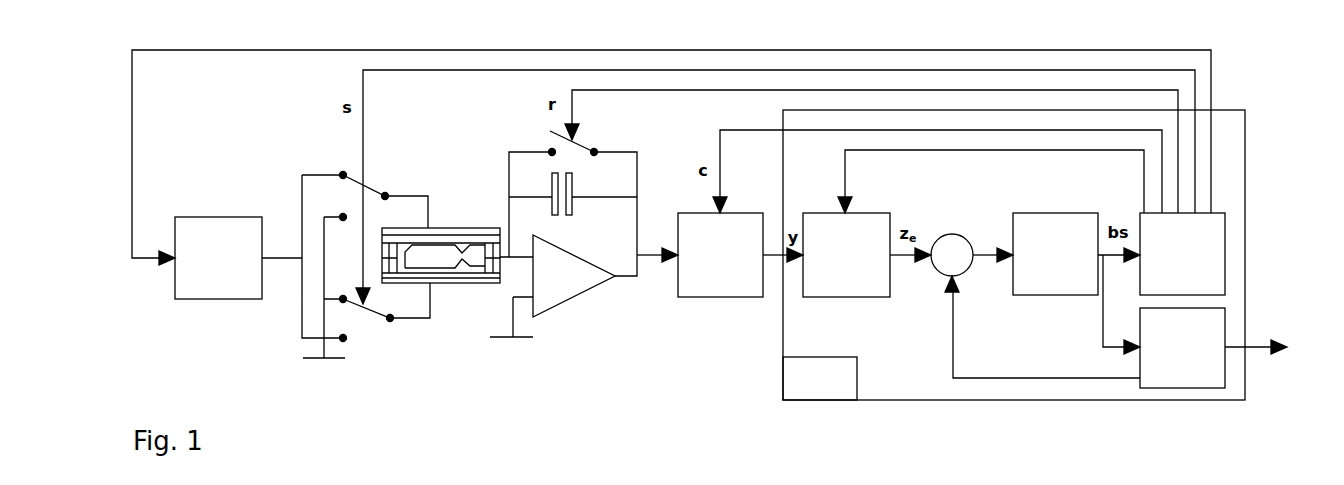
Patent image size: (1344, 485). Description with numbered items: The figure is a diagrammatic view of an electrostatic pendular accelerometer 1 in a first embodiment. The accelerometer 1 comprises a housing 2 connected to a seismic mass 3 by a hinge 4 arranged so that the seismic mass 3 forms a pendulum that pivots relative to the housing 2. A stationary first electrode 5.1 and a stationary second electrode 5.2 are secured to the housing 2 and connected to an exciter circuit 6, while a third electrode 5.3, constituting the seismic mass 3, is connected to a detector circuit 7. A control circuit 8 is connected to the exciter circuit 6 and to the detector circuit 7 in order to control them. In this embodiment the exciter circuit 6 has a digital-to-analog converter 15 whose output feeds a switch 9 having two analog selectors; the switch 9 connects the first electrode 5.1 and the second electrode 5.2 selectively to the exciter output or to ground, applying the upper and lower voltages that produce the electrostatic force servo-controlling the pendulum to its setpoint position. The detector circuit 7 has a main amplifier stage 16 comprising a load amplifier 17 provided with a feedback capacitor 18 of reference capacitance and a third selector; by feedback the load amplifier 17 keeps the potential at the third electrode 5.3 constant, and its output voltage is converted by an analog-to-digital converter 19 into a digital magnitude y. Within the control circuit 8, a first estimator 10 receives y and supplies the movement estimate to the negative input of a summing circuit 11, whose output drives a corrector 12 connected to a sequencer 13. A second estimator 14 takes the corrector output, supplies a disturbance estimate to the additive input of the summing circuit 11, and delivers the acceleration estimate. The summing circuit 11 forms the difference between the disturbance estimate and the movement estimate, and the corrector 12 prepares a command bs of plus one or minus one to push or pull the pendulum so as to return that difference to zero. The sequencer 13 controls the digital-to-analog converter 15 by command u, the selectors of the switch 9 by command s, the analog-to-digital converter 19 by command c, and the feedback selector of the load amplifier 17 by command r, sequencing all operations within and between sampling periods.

The electrostatic pendular accelerometer 1 is at (441, 291).
The housing 2 is at (490, 253).
The seismic mass 3 is at (437, 258).
The hinge 4 is at (468, 250).
The first electrode 5.1 is at (440, 228).
The second electrode 5.2 is at (472, 278).
The third electrode 5.3 is at (453, 258).
The exciter circuit 6 is at (229, 186).
The detector circuit 7 is at (711, 338).
The control circuit 8 is at (868, 383).
The switch 9 is at (388, 163).
The first estimator 10 is at (817, 283).
The summing circuit 11 is at (945, 262).
The corrector 12 is at (1047, 285).
The sequencer 13 is at (1215, 225).
The second estimator 14 is at (1215, 322).
The digital-to-analog converter 15 is at (213, 290).
The main amplifier stage 16 is at (584, 293).
The load amplifier 17 is at (600, 278).
The feedback capacitor 18 is at (570, 205).
The analog-to-digital converter 19 is at (723, 287).